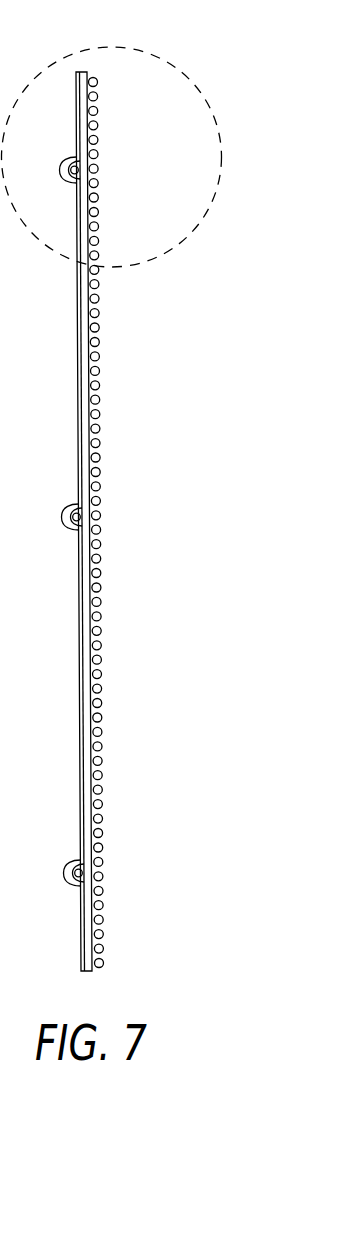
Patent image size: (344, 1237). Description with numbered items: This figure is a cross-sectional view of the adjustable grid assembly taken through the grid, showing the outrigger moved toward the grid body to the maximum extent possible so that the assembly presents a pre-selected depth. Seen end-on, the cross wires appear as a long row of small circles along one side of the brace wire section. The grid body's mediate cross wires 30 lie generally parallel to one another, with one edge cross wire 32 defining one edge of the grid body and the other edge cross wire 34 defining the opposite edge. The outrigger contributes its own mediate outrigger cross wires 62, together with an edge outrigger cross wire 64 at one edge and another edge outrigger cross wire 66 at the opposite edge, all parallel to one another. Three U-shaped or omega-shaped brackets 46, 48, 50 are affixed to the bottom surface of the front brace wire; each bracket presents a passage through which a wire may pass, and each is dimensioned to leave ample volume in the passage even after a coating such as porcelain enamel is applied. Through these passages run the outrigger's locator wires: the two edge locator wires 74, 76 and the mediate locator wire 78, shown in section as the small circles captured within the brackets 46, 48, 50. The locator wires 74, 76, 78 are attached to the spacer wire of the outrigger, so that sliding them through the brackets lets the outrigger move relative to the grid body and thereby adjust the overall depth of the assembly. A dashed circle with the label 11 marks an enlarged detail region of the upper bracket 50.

The detail region shown in FIG. 11 is at (170, 252).
The mediate cross wires 30 is at (98, 398).
The edge cross wire 32 is at (103, 965).
The other edge cross wire 34 is at (96, 80).
The U-shaped bracket 46 is at (64, 862).
The U-shaped bracket 48 is at (62, 507).
The U-shaped bracket 50 is at (65, 157).
The mediate outrigger cross wires 62 is at (100, 413).
The edge outrigger cross wire 64 is at (103, 947).
The other edge outrigger cross wire 66 is at (100, 95).
The edge locator wire 74 is at (82, 872).
The other edge locator wire 76 is at (77, 168).
The mediate locator wire 78 is at (80, 515).